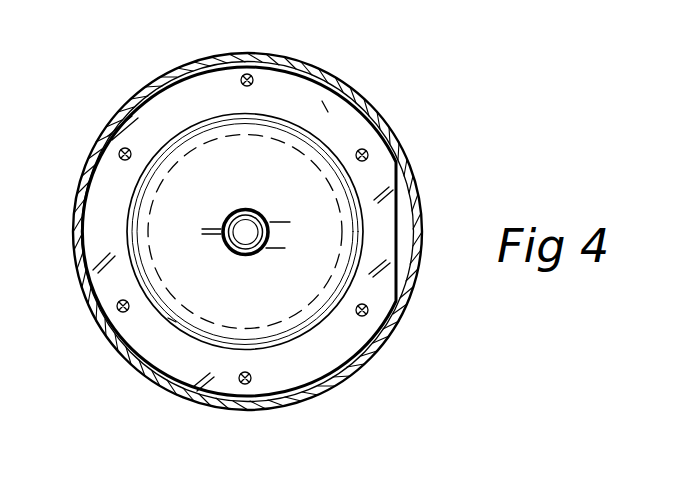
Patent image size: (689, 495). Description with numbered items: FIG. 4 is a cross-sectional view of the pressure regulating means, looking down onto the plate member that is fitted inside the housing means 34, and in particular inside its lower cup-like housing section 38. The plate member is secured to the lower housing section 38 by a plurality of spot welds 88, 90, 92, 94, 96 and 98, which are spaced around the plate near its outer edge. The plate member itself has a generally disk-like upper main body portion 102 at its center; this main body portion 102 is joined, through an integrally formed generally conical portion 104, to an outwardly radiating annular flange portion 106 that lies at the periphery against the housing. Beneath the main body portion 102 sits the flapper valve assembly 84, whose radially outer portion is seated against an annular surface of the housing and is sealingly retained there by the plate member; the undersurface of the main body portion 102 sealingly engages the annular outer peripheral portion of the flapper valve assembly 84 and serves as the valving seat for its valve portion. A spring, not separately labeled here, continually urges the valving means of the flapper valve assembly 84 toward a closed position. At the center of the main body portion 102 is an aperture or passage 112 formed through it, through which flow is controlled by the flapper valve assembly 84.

The housing means 34 is at (364, 376).
The lower cup-like housing section 38 is at (415, 282).
The flapper valve assembly 84 is at (190, 157).
The spot weld 88 is at (119, 155).
The spot weld 90 is at (252, 76).
The spot weld 92 is at (368, 152).
The spot weld 94 is at (390, 326).
The spot weld 96 is at (250, 384).
The spot weld 98 is at (118, 312).
The disk-like upper main body portion 102 is at (309, 207).
The conical portion 104 is at (173, 320).
The annular flange portion 106 is at (322, 101).
The aperture or passage 112 is at (226, 232).